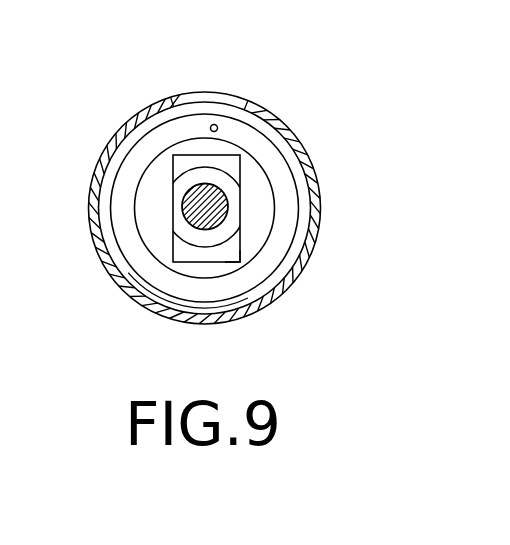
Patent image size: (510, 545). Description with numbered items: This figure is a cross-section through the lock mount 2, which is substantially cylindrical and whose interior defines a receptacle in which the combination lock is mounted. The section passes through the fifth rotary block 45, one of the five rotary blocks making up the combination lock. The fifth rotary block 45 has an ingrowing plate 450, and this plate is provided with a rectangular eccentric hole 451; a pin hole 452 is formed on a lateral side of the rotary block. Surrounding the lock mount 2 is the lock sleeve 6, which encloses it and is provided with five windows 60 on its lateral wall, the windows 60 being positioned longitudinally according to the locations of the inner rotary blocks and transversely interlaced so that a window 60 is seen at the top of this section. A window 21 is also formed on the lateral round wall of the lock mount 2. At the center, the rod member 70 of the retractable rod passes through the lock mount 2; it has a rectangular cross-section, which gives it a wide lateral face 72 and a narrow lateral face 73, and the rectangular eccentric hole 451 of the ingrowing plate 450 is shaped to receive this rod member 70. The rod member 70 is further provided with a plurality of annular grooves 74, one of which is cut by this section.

The lock mount 2 is at (128, 272).
The lock sleeve 6 is at (138, 297).
The window 21 is at (197, 113).
The fifth rotary block 45 is at (277, 247).
The windows 60 is at (208, 95).
The rod member 70 is at (198, 203).
The wide lateral face 72 is at (290, 147).
The narrow lateral face 73 is at (170, 208).
The annular grooves 74 is at (223, 170).
The ingrowing plate 450 is at (262, 223).
The rectangular eccentric hole 451 is at (227, 253).
The pin hole 452 is at (215, 124).